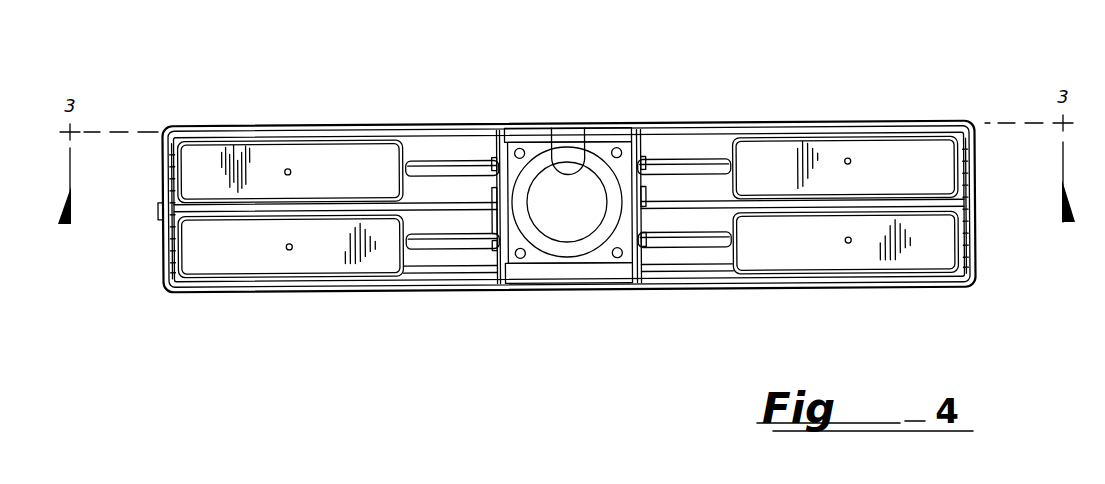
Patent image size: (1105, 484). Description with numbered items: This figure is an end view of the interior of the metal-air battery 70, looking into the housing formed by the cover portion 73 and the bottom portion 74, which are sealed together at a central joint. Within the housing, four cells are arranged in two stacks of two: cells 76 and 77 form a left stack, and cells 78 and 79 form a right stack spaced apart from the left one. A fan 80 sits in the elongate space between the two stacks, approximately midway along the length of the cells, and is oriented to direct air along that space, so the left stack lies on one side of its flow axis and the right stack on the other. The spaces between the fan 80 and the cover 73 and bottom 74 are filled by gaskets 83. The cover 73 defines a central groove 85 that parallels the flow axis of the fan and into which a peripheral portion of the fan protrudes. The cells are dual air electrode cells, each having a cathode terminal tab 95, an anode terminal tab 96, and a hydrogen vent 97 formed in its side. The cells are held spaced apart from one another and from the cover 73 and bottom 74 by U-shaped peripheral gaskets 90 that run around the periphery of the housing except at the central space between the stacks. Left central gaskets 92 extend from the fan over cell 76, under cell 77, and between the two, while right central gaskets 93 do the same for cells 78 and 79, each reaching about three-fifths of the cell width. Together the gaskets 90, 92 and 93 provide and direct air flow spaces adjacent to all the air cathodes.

The metal-air battery 70 is at (806, 57).
The cover portion 73 is at (342, 123).
The bottom portion 74 is at (163, 250).
The cell 76 is at (207, 153).
The cell 77 is at (212, 262).
The cell 78 is at (932, 153).
The cell 79 is at (950, 247).
The fan 80 is at (556, 216).
The gaskets 83 is at (526, 133).
The central groove 85 is at (590, 138).
The U-shaped peripheral gaskets 90 is at (290, 134).
The left central gaskets 92 is at (381, 133).
The right central gaskets 93 is at (694, 134).
The cathode terminal tab 95 is at (430, 161).
The anode terminal tab 96 is at (682, 158).
The hydrogen vent 97 is at (846, 148).